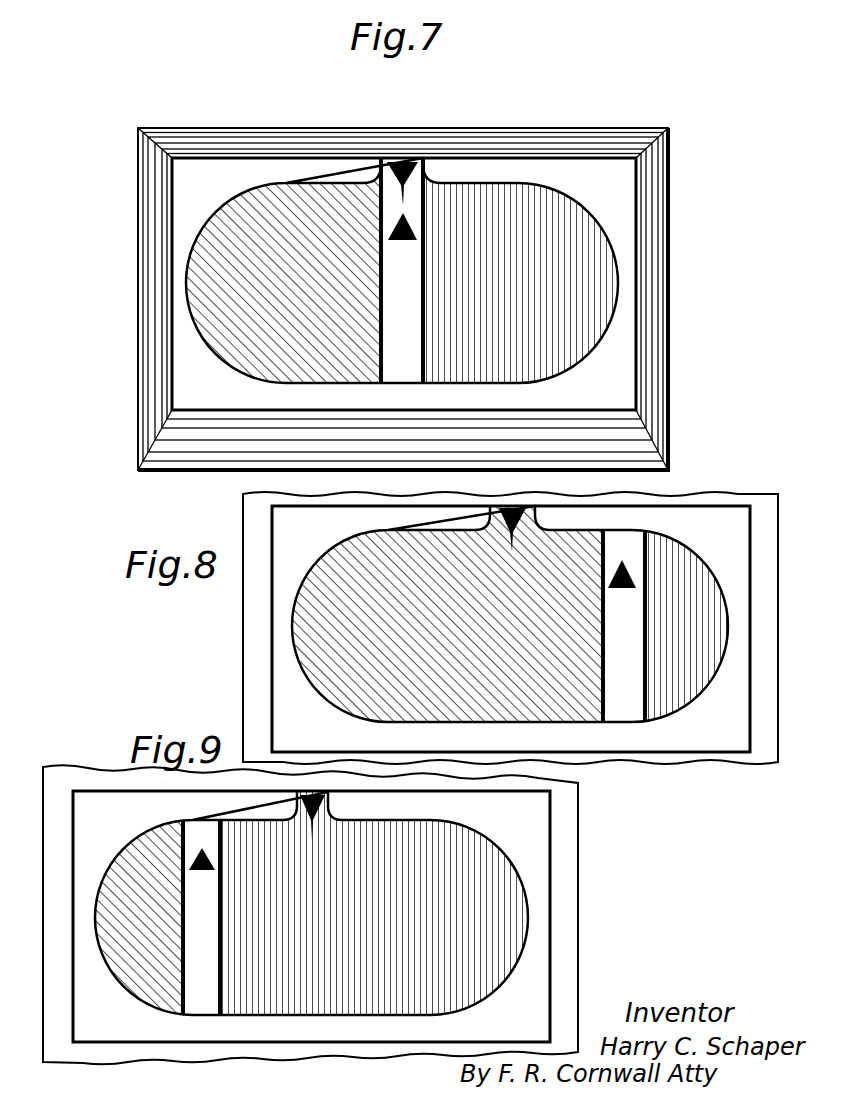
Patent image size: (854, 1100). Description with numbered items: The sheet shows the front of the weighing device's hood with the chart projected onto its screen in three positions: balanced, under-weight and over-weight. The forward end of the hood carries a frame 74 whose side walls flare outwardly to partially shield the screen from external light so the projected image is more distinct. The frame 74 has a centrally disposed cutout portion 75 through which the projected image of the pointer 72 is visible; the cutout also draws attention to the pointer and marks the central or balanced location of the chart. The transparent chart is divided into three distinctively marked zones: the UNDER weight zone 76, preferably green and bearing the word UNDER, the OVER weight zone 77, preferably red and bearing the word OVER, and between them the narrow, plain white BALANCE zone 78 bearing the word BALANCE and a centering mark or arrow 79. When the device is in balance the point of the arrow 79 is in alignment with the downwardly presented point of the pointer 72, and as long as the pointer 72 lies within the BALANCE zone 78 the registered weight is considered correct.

In FIG. 7, the pointer 72 is at (392, 207).
In FIG. 8, the pointer 72 is at (500, 537).
In FIG. 9, the pointer 72 is at (303, 820).
In FIG. 7, the frame 74 is at (203, 127).
In FIG. 7, the cutout portion 75 is at (348, 168).
In FIG. 8, the cutout portion 75 is at (624, 552).
In FIG. 9, the cutout portion 75 is at (210, 1000).
In FIG. 7, the UNDER weight zone 76 is at (277, 358).
In FIG. 8, the UNDER weight zone 76 is at (330, 624).
In FIG. 9, the UNDER weight zone 76 is at (132, 858).
In FIG. 7, the OVER weight zone 77 is at (547, 350).
In FIG. 8, the OVER weight zone 77 is at (672, 722).
In FIG. 9, the OVER weight zone 77 is at (512, 913).
In FIG. 7, the BALANCE zone 78 is at (397, 376).
In FIG. 7, the centering mark or arrow 79 is at (412, 216).